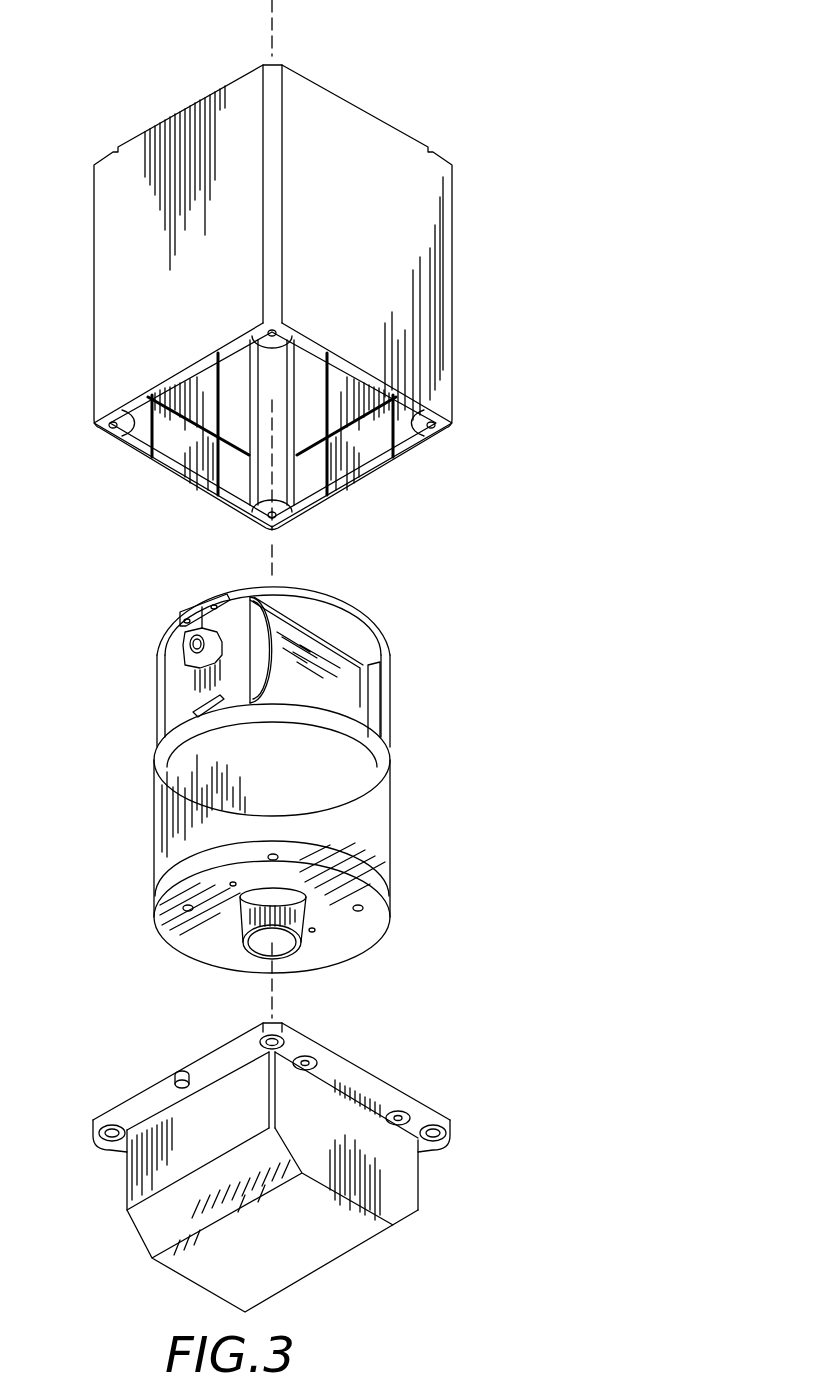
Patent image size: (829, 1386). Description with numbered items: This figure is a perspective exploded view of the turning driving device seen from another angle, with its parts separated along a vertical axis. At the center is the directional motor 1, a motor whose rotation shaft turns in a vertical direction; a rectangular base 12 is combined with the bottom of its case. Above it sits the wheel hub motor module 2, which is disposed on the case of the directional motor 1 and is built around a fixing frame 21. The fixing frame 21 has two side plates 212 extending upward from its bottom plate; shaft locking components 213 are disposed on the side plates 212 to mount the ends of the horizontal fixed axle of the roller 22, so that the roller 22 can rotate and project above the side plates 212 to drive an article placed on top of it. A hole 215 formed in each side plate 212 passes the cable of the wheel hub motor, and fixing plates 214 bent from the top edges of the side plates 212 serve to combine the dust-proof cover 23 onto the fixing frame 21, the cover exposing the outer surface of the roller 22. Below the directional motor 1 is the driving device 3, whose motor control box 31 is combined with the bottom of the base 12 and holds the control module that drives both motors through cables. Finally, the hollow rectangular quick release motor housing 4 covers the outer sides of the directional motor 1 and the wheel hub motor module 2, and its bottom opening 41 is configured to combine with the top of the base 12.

The directional motor 1 is at (375, 815).
The base 12 is at (160, 1087).
The wheel hub motor module 2 is at (268, 653).
The fixing frame 21 is at (315, 653).
The side plate 212 is at (232, 640).
The shaft locking component 213 is at (192, 644).
The fixing plate 214 is at (185, 612).
The hole 215 is at (198, 712).
The roller 22 is at (327, 694).
The dust-proof cover 23 is at (337, 598).
The driving device 3 is at (270, 1167).
The motor control box 31 is at (400, 1190).
The quick release motor housing 4 is at (237, 297).
The opening 41 is at (358, 468).